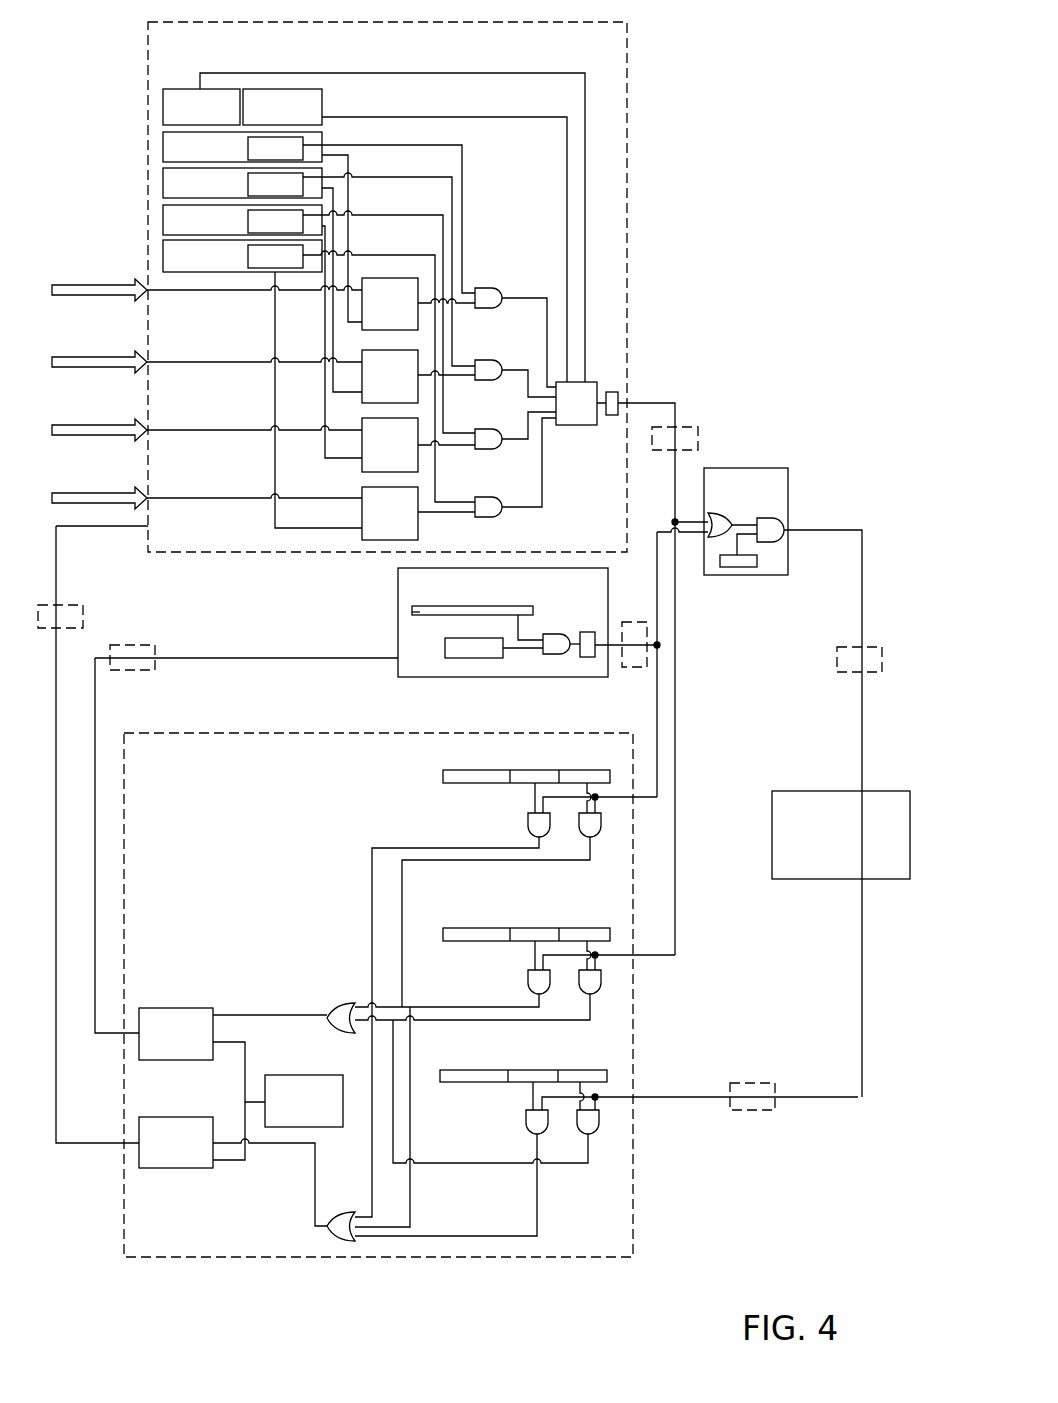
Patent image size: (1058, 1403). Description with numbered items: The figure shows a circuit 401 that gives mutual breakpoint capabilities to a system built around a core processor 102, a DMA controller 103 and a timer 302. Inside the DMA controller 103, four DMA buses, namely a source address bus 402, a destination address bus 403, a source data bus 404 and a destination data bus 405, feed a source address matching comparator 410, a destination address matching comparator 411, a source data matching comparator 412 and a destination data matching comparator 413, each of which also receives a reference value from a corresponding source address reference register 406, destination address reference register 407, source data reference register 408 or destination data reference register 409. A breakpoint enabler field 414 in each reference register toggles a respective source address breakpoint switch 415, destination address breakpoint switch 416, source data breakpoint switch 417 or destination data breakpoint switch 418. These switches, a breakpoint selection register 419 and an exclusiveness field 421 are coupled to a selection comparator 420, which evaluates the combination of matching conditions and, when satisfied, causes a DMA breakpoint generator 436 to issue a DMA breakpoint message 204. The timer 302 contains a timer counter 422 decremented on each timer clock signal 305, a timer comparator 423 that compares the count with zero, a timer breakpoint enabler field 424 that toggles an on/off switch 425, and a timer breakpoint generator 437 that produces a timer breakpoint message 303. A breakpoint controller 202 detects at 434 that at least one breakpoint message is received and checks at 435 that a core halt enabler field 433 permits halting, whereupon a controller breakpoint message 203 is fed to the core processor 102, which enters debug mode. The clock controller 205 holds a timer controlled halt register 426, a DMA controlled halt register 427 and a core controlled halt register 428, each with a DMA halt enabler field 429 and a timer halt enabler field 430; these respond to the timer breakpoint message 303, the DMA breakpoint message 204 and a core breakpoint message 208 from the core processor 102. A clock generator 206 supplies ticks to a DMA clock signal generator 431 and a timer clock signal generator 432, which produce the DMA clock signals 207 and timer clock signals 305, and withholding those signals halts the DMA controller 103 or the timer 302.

The core processor 102 is at (795, 791).
The DMA controller 103 is at (627, 114).
The breakpoint controller 202 is at (745, 468).
The controller breakpoint message 203 is at (845, 655).
The DMA breakpoint message 204 is at (673, 444).
The clock controller 205 is at (633, 1213).
The clock generator 206 is at (304, 1101).
The DMA clock signal 207 is at (68, 615).
The core breakpoint message 208 is at (750, 1092).
The timer 302 is at (398, 597).
The timer breakpoint message 303 is at (645, 667).
The timer clock signal 305 is at (128, 657).
The circuit 401 is at (754, 197).
The source address bus 402 is at (65, 285).
The destination address bus 403 is at (65, 357).
The source data bus 404 is at (65, 425).
The destination data bus 405 is at (65, 493).
The source address reference register 406 is at (262, 227).
The destination address reference register 407 is at (262, 280).
The source data reference register 408 is at (262, 331).
The destination data reference register 409 is at (262, 384).
The source address matching comparator 410 is at (418, 304).
The destination address matching comparator 411 is at (418, 376).
The source data matching comparator 412 is at (418, 445).
The destination data matching comparator 413 is at (418, 513).
The breakpoint enabler field 414 is at (361, 319).
The source address breakpoint switch 415 is at (493, 290).
The destination address breakpoint switch 416 is at (490, 361).
The source data breakpoint switch 417 is at (480, 431).
The destination data breakpoint switch 418 is at (482, 498).
The breakpoint selection register 419 is at (374, 227).
The selection comparator 420 is at (580, 410).
The exclusiveness field 421 is at (405, 235).
The timer counter 422 is at (418, 614).
The timer comparator 423 is at (466, 659).
The timer breakpoint enabler field 424 is at (521, 606).
The on/off switch 425 is at (556, 656).
The timer controlled halt register 426 is at (443, 777).
The DMA controlled halt register 427 is at (443, 935).
The core controlled halt register 428 is at (440, 1076).
The DMA halt enabler field 429 is at (524, 771).
The timer halt enabler field 430 is at (581, 771).
The DMA clock signal generator 431 is at (247, 1171).
The timer clock signal generator 432 is at (247, 1052).
The core halt enabler field 433 is at (737, 567).
The breakpoint message detector 434 is at (713, 513).
The core halt enable gate 435 is at (770, 540).
The DMA breakpoint generator 436 is at (612, 392).
The timer breakpoint generator 437 is at (590, 632).